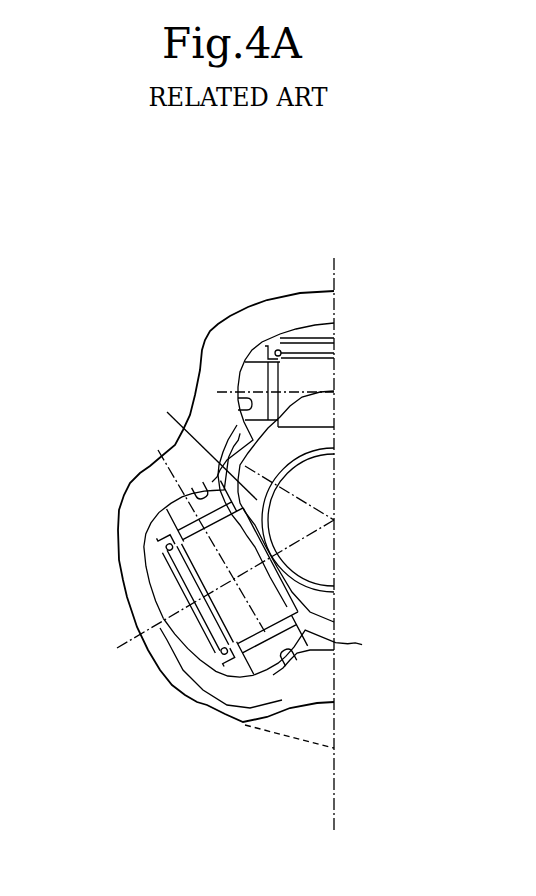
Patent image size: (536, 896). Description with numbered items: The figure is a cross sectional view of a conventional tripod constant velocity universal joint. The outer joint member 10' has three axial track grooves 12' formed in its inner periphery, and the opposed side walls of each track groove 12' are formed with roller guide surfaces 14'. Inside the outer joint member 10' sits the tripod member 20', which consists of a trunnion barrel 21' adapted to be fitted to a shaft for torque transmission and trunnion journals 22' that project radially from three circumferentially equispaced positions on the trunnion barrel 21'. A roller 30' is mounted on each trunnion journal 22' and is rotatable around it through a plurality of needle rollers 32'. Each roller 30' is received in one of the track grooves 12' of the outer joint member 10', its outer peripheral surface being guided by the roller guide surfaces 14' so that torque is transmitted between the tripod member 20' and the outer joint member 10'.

The outer joint member 10' is at (226, 491).
The track groove 12' is at (189, 427).
The roller guide surface 14' is at (190, 594).
The tripod member 20' is at (298, 658).
The trunnion barrel 21' is at (216, 506).
The trunnion journal 22' is at (217, 455).
The roller 30' is at (232, 471).
The needle roller 32' is at (205, 573).